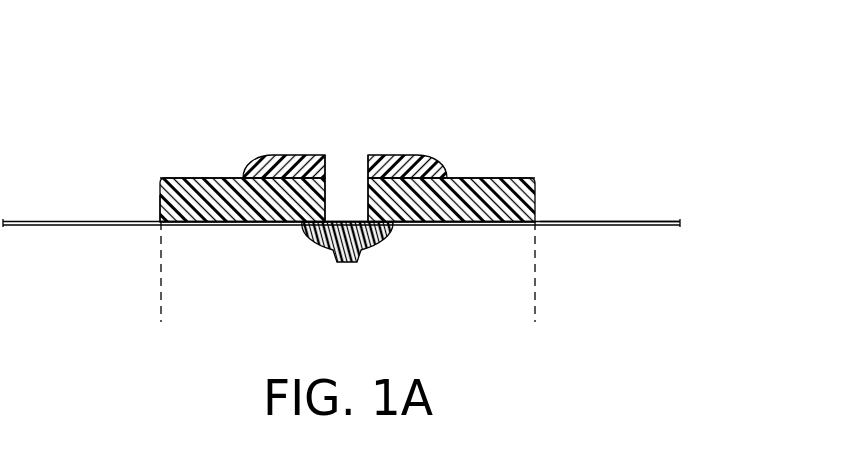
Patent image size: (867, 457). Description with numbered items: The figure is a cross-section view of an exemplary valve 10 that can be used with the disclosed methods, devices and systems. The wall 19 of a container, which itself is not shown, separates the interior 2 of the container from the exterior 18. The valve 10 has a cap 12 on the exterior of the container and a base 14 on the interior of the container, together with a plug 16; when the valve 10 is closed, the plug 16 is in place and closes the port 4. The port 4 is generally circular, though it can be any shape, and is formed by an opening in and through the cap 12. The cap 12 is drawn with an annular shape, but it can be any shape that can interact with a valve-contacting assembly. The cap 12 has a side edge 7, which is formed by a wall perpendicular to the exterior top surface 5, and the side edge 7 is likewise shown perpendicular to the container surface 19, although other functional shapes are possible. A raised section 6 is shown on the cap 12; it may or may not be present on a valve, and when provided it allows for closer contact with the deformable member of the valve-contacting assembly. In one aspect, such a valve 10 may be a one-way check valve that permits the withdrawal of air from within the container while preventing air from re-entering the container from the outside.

The interior 2 is at (657, 271).
The port 4 is at (353, 162).
The exterior top surface 5 is at (223, 178).
The raised section 6 is at (417, 153).
The side edge 7 is at (160, 200).
The valve 10 is at (326, 173).
The cap 12 is at (187, 180).
The base 14 is at (161, 275).
The plug 16 is at (373, 240).
The exterior 18 is at (662, 206).
The wall 19 is at (678, 226).